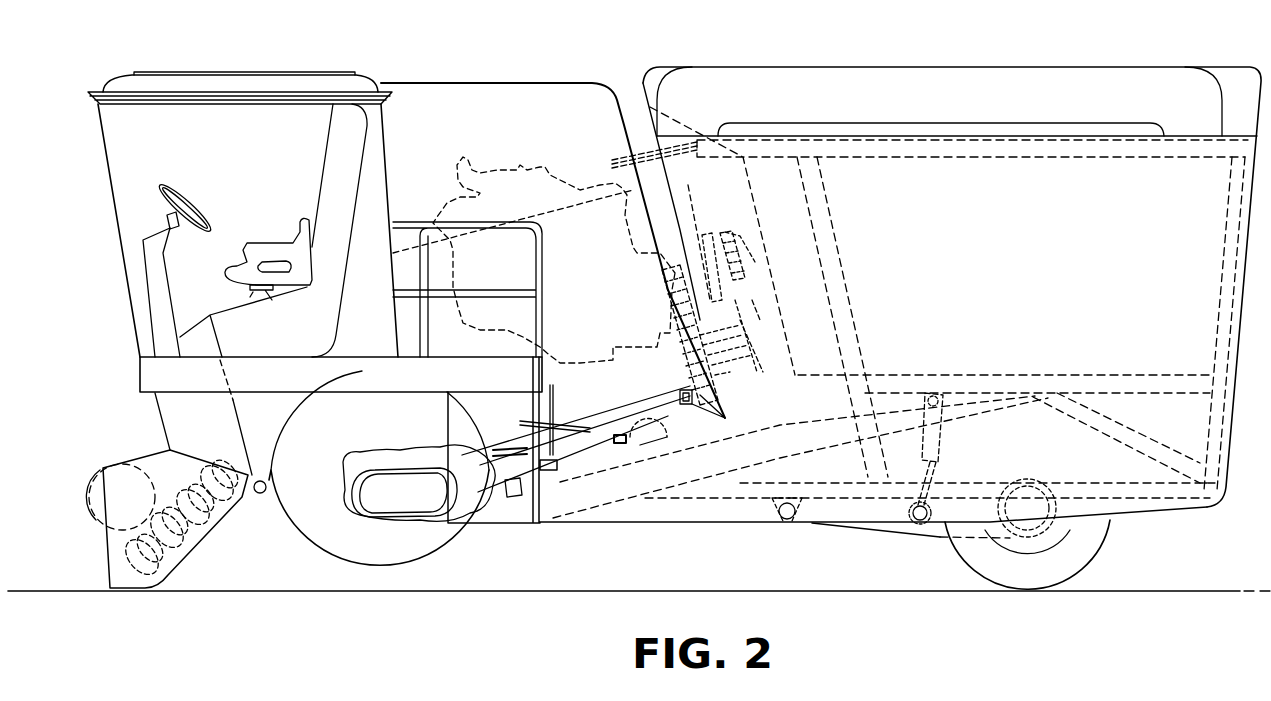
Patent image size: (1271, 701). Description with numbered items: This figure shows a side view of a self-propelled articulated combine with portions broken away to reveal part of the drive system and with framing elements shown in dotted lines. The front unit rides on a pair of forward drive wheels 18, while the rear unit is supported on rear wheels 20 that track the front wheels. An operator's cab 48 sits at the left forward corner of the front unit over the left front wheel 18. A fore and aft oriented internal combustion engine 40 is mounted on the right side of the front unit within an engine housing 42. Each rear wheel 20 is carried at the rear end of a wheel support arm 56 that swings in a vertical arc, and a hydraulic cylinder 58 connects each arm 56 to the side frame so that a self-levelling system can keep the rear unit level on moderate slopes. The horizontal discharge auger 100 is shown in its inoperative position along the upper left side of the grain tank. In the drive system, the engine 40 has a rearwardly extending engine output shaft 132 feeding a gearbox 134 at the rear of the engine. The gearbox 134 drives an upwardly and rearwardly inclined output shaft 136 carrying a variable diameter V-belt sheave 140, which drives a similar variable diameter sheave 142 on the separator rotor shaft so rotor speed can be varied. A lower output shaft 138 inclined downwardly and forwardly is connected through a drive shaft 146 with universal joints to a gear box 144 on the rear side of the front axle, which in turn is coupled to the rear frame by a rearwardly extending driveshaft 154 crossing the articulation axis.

The forward drive wheels 18 is at (473, 546).
The rear wheels 20 is at (1106, 546).
The internal combustion engine 40 is at (545, 167).
The engine housing 42 is at (554, 84).
The operator's station or cab 48 is at (371, 54).
The wheel support arms 56 is at (913, 530).
The hydraulic cylinder 58 is at (940, 447).
The horizontal discharge auger 100 is at (923, 72).
The engine output shaft 132 is at (667, 302).
The gearbox 134 is at (725, 418).
The output shaft 136 is at (725, 383).
The lower output shaft 138 is at (698, 417).
The variable diameter V-belt sheave 140 is at (763, 371).
The variable diameter sheave 142 is at (740, 224).
The gear box 144 is at (463, 460).
The drive shaft 146 is at (585, 430).
The rearwardly extending driveshaft 154 is at (547, 463).